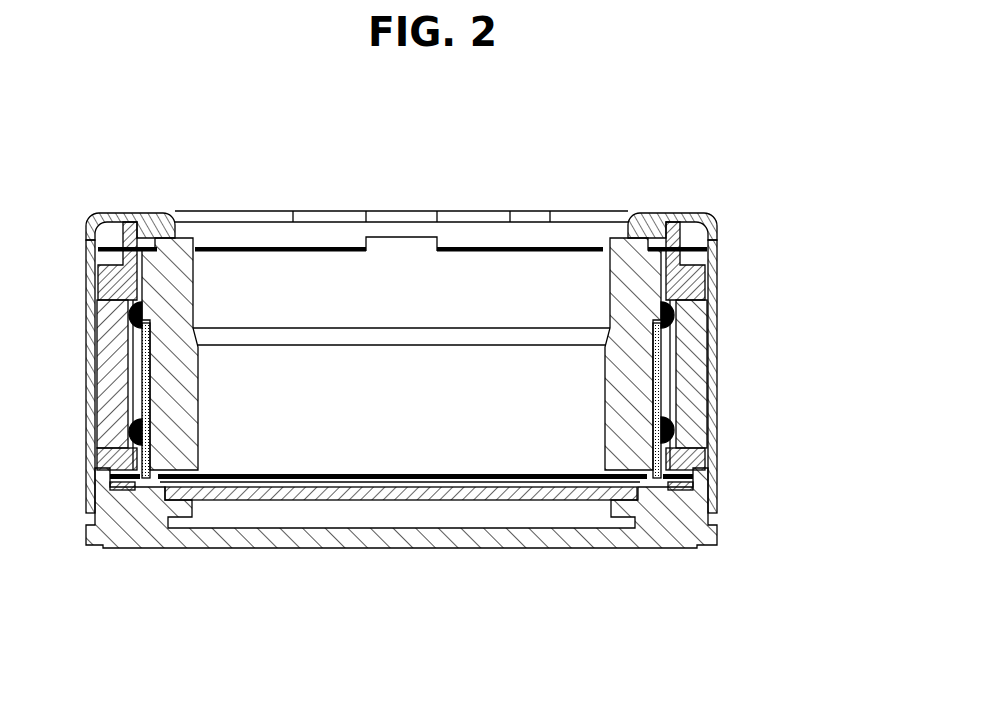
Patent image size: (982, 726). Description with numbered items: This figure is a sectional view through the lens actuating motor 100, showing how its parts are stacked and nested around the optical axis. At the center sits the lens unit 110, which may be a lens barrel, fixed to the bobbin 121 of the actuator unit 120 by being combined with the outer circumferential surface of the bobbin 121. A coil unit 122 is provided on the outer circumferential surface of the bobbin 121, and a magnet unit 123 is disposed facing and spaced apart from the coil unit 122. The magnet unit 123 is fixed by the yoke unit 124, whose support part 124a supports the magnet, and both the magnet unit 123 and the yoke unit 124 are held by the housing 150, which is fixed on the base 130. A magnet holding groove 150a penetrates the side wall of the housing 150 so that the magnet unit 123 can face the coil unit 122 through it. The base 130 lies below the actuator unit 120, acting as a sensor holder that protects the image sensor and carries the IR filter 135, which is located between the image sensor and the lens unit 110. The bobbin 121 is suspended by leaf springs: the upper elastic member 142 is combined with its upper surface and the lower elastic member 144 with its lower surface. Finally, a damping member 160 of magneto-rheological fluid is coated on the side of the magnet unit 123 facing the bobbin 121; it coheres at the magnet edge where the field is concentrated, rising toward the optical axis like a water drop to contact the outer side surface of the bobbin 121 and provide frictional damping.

The lens actuating motor 100 is at (90, 110).
The lens unit 110 is at (333, 285).
The actuator unit 120 is at (797, 278).
The bobbin 121 is at (649, 297).
The coil unit 122 is at (658, 345).
The magnet unit 123 is at (697, 372).
The yoke unit 124 is at (712, 401).
The support part 124a is at (714, 236).
The base 130 is at (697, 548).
The IR filter 135 is at (413, 502).
The upper elastic member 142 is at (227, 243).
The lower elastic member 144 is at (509, 482).
The housing 150 is at (123, 213).
The magnet holding groove 150a is at (133, 380).
The damping member 160 is at (673, 418).